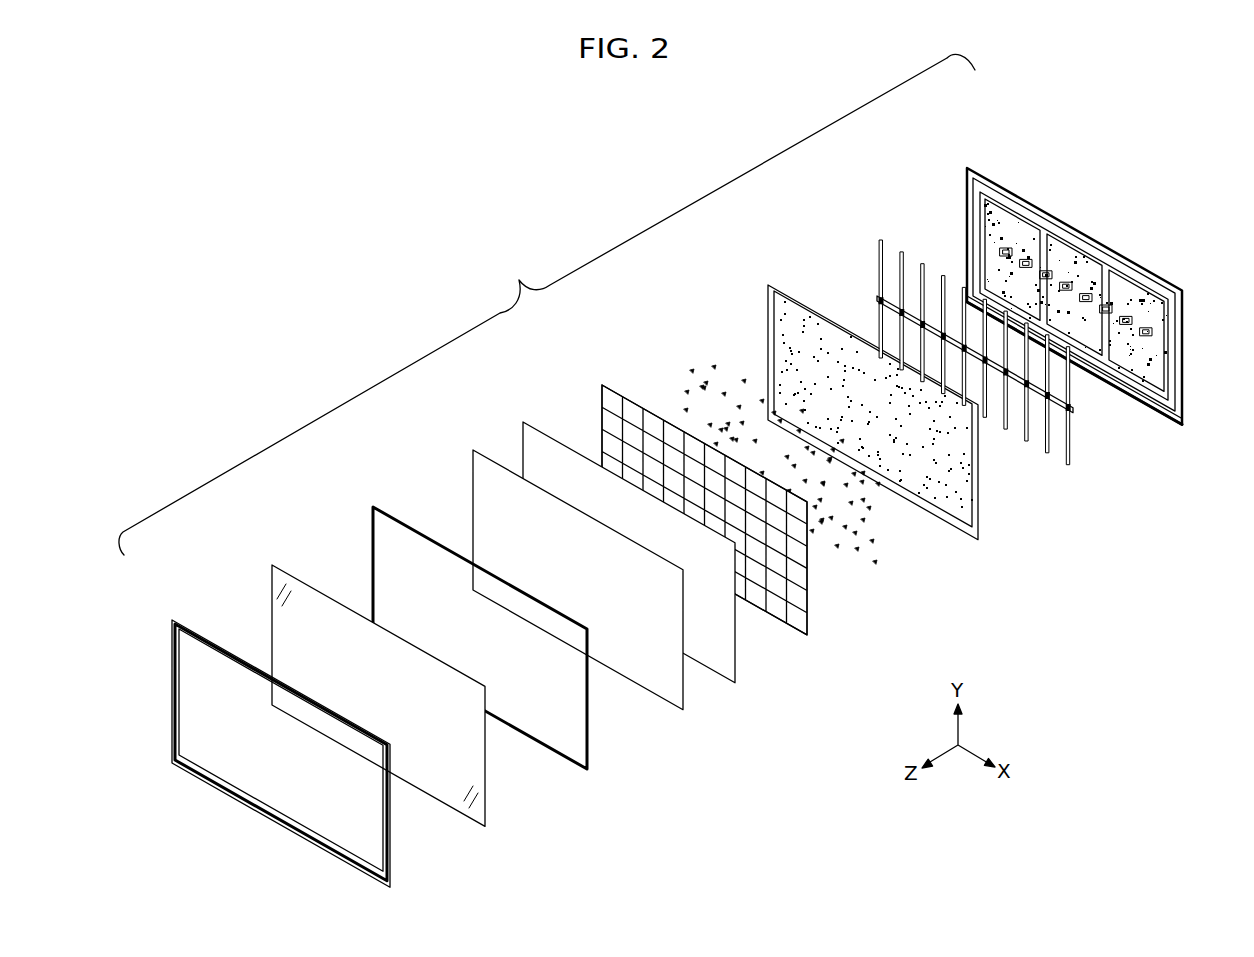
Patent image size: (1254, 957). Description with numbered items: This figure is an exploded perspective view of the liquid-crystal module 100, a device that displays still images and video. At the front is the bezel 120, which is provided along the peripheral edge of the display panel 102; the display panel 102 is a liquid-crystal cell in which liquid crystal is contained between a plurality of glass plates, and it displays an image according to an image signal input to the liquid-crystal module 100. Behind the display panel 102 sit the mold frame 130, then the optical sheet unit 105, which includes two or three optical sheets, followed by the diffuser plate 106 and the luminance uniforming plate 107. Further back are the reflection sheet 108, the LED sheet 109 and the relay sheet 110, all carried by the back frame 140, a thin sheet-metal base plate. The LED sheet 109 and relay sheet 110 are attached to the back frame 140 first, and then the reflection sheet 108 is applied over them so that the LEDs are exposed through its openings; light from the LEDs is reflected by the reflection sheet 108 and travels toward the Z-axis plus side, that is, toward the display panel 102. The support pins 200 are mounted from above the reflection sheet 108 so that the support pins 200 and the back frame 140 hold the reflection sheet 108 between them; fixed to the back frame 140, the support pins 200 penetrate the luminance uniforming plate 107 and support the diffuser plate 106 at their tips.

The liquid-crystal module 100 is at (547, 304).
The display panel 102 is at (276, 566).
The optical sheet unit 105 is at (474, 451).
The diffuser plate 106 is at (524, 423).
The luminance uniforming plate 107 is at (603, 386).
The reflection sheet 108 is at (769, 285).
The LED sheet 109 is at (881, 240).
The relay sheet 110 is at (1040, 393).
The bezel 120 is at (176, 620).
The mold frame 130 is at (376, 508).
The back frame 140 is at (967, 168).
The support pin 200 is at (693, 354).